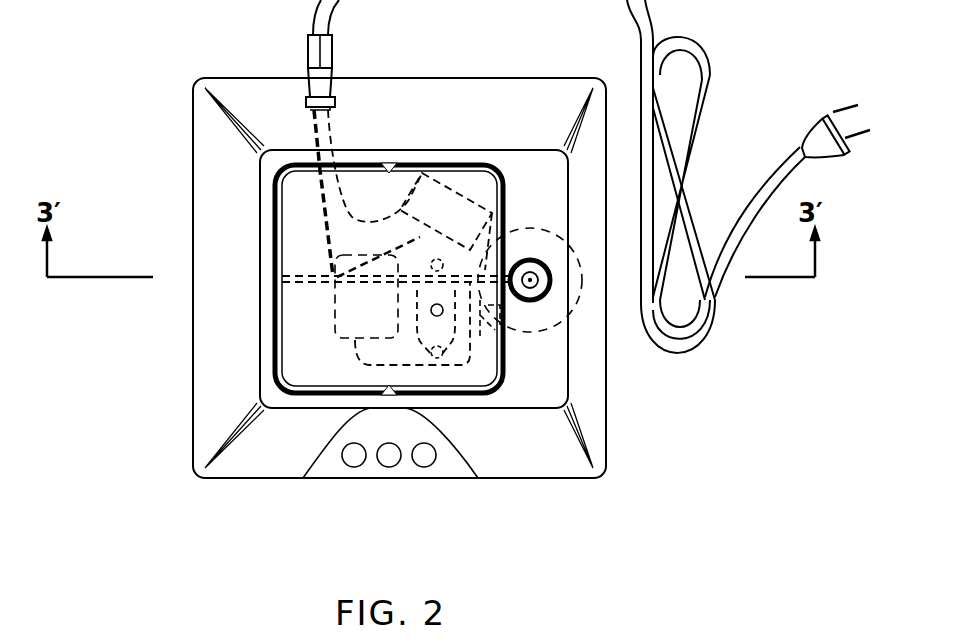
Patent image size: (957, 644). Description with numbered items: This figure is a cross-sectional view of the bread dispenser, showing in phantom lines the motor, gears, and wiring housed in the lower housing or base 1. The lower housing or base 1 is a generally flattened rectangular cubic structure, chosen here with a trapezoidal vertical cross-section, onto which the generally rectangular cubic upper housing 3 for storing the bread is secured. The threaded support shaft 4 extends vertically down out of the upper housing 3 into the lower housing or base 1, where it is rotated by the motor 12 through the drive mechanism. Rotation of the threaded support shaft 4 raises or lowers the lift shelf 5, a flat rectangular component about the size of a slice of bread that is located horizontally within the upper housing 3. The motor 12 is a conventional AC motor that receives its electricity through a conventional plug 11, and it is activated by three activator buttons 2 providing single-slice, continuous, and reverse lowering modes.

The lower housing or base 1 is at (253, 455).
The activator button 2 is at (424, 457).
The upper housing 3 is at (272, 187).
The threaded support shaft 4 is at (533, 285).
The lift shelf 5 is at (297, 193).
The plug 11 is at (818, 128).
The motor 12 is at (357, 310).